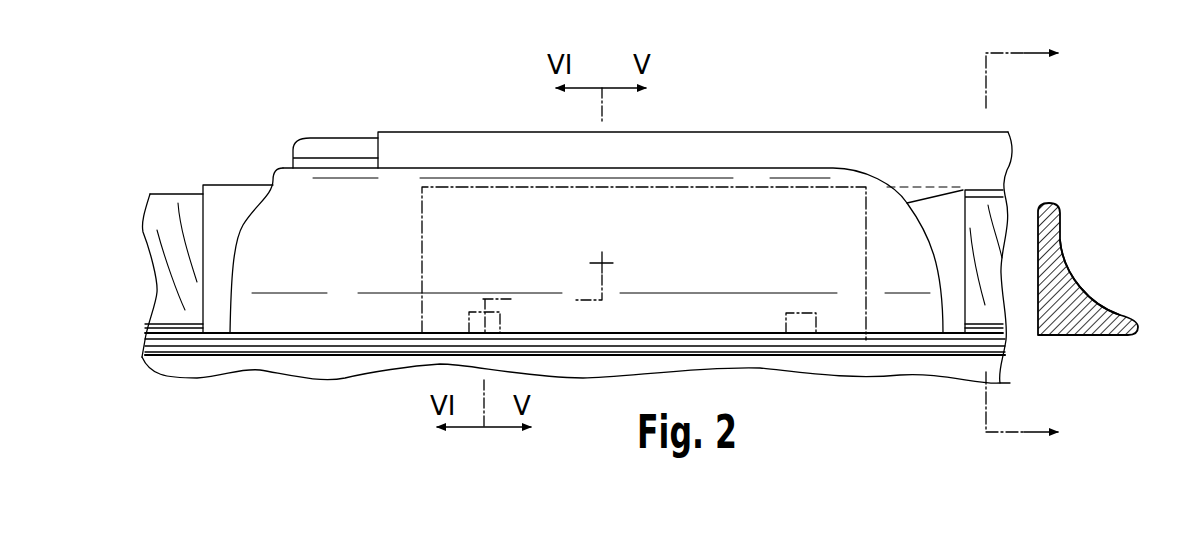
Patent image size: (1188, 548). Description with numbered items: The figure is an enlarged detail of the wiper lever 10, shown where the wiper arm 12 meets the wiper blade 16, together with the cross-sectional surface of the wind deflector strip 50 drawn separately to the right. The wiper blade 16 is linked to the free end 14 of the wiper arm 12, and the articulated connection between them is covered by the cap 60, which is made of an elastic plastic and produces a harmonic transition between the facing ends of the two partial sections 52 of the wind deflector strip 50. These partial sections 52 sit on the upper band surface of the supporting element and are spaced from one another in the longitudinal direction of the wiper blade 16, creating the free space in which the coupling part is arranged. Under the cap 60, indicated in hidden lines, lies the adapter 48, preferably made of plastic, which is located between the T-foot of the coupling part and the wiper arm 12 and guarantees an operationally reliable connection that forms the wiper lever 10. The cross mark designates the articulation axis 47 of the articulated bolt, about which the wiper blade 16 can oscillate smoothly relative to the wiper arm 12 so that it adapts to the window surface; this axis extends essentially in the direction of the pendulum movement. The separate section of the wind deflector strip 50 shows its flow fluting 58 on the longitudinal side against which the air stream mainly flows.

The wiper lever 10 is at (347, 127).
The wiper arm 12 is at (997, 143).
The free end of the wiper arm 14 is at (442, 152).
The wiper blade 16 is at (150, 349).
The articulation axis 47 is at (608, 258).
The adapter 48 is at (868, 302).
The wind deflector strip 50 is at (1070, 250).
The partial sections of the wind deflector strip 52 is at (160, 212).
The flow fluting 58 is at (1075, 278).
The cap 60 is at (269, 179).